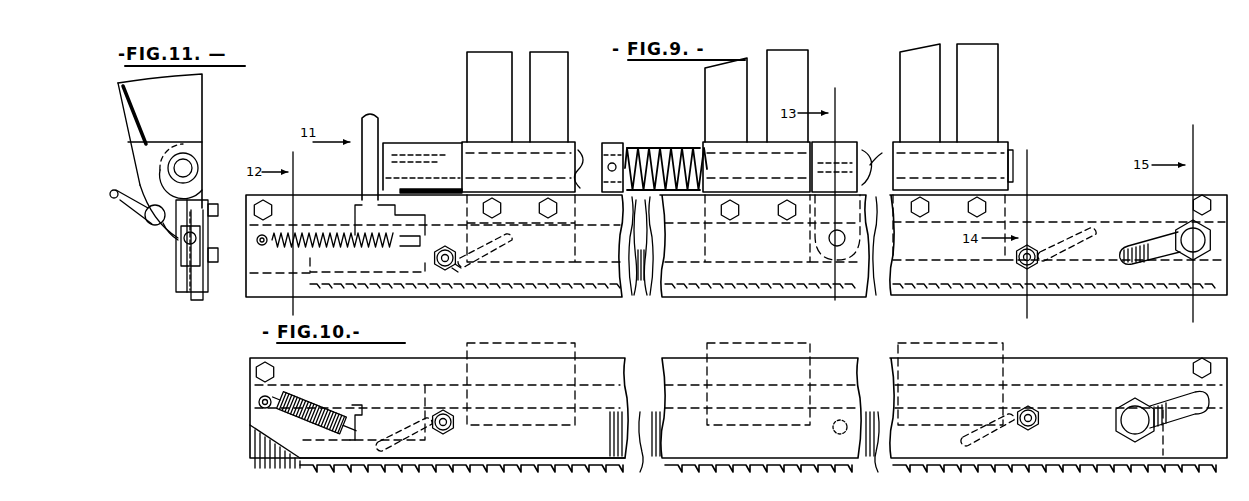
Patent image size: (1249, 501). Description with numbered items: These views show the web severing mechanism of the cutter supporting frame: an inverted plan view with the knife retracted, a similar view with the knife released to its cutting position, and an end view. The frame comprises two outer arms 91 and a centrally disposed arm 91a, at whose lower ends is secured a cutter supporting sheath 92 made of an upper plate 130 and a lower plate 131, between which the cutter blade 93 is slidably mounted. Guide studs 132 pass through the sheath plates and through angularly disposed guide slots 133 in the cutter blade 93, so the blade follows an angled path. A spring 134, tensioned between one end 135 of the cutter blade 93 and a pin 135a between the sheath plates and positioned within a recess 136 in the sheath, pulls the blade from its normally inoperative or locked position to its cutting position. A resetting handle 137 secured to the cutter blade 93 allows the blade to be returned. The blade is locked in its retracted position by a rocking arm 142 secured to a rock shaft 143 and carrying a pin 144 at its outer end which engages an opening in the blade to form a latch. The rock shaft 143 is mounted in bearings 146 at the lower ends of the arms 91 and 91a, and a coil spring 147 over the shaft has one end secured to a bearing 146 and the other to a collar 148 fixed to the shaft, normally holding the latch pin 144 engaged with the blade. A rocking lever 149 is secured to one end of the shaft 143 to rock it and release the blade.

In FIG. 9, the outer arm 91 is at (468, 96).
In FIG. 9, the centrally disposed arm 91a is at (705, 98).
In FIG. 11, the cutter supporting sheath 92 is at (195, 298).
In FIG. 11, the cutter blade 93 is at (190, 252).
In FIG. 9, the cutter blade 93 is at (628, 292).
In FIG. 10, the cutter blade 93 is at (787, 468).
In FIG. 11, the upper plate 130 is at (176, 290).
In FIG. 9, the upper plate 130 is at (665, 212).
In FIG. 10, the upper plate 130 is at (862, 372).
In FIG. 11, the lower plate 131 is at (212, 286).
In FIG. 9, the guide stud 132 is at (446, 272).
In FIG. 10, the guide stud 132 is at (456, 427).
In FIG. 9, the guide slot 133 is at (500, 245).
In FIG. 10, the guide slot 133 is at (396, 430).
In FIG. 9, the spring 134 is at (322, 232).
In FIG. 10, the spring 134 is at (313, 404).
In FIG. 9, the end of the cutter blade 135 is at (420, 242).
In FIG. 10, the end of the cutter blade 135 is at (346, 412).
In FIG. 9, the pin 135a is at (262, 246).
In FIG. 10, the pin 135a is at (257, 402).
In FIG. 9, the recess 136 is at (380, 274).
In FIG. 9, the resetting handle 137 is at (1188, 258).
In FIG. 10, the resetting handle 137 is at (1126, 406).
In FIG. 9, the rocking arm 142 is at (845, 140).
In FIG. 9, the rock shaft 143 is at (870, 152).
In FIG. 9, the pin 144 is at (830, 248).
In FIG. 9, the bearing 146 is at (548, 138).
In FIG. 9, the coil spring 147 is at (655, 186).
In FIG. 9, the collar 148 is at (620, 140).
In FIG. 11, the rocking lever 149 is at (148, 172).
In FIG. 9, the rocking lever 149 is at (402, 158).